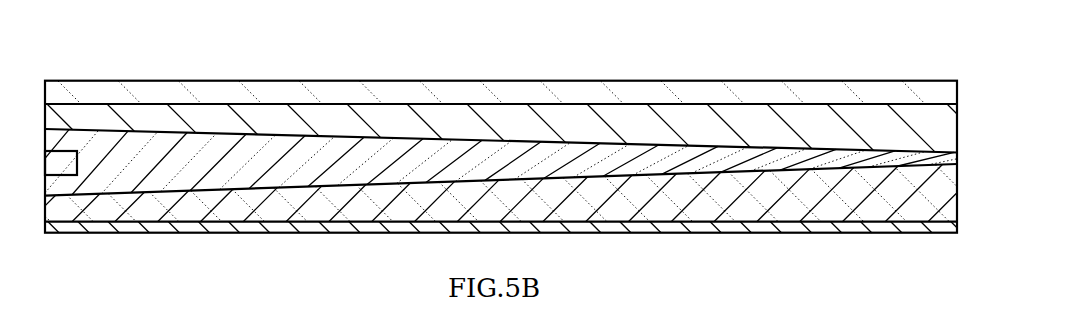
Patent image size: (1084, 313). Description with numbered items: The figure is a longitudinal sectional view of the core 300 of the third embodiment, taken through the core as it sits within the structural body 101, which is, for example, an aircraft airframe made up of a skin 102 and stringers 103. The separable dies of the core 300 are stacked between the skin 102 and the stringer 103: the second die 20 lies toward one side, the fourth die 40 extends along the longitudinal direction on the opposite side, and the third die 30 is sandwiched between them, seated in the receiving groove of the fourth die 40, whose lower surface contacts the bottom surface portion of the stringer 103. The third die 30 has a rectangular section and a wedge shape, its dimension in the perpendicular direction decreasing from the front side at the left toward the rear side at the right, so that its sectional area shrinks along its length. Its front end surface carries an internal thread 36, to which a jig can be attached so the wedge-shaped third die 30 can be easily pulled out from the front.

The internal thread 36 is at (62, 163).
The skin 102 is at (212, 90).
The second die 20 is at (338, 113).
The structural body 101 is at (595, 81).
The core 300 is at (728, 104).
The stringer 103 is at (220, 226).
The fourth die 40 is at (314, 203).
The third die 30 is at (403, 163).